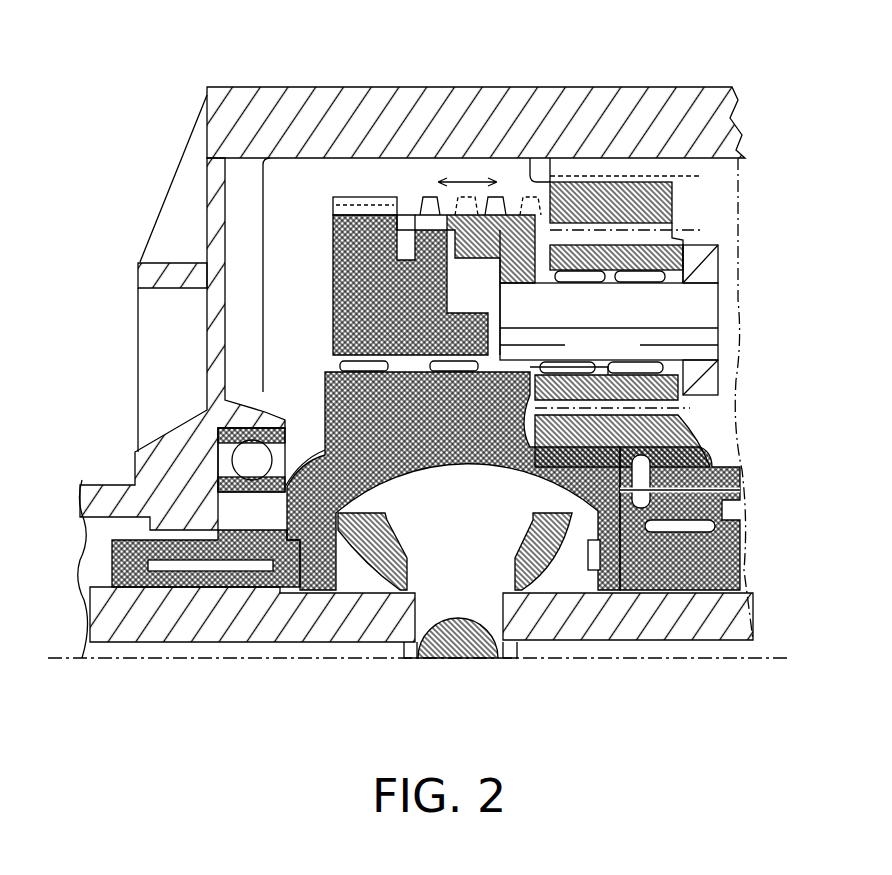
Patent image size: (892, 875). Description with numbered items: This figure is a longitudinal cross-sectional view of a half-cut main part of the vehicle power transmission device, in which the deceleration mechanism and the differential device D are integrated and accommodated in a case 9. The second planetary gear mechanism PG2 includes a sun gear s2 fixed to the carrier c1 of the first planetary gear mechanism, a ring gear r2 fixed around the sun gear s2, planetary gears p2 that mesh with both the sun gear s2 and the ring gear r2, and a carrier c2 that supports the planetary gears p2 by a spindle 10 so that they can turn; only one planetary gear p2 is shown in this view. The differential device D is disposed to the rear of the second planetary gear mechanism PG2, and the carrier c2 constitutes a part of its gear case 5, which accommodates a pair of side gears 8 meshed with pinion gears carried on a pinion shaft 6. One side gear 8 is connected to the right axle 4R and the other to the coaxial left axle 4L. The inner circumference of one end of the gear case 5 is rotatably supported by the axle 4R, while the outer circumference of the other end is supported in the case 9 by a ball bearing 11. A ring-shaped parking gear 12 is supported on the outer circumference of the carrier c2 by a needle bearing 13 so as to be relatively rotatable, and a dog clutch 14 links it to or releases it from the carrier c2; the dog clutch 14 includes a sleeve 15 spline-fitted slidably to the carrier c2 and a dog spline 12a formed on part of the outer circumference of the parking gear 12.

The case 9 is at (714, 87).
The parking gear 12 is at (332, 258).
The dog spline 12a is at (415, 228).
The dog clutch 14 is at (472, 157).
The sleeve 15 is at (430, 197).
The second planetary gear mechanism PG2 is at (733, 222).
The ring gear r2 is at (673, 205).
The planetary gear p2 is at (720, 250).
The spindle 10 is at (720, 318).
The sun gear s2 is at (690, 447).
The differential device D is at (311, 370).
The bearing 13 is at (380, 372).
The carrier c2 is at (506, 468).
The gear case 5 is at (318, 468).
The bearing 11 is at (218, 440).
The carrier c1 is at (742, 480).
The side gear 8 is at (392, 552).
The pinion shaft 6 is at (462, 618).
The axle 4L is at (212, 643).
The axle 4R is at (690, 641).